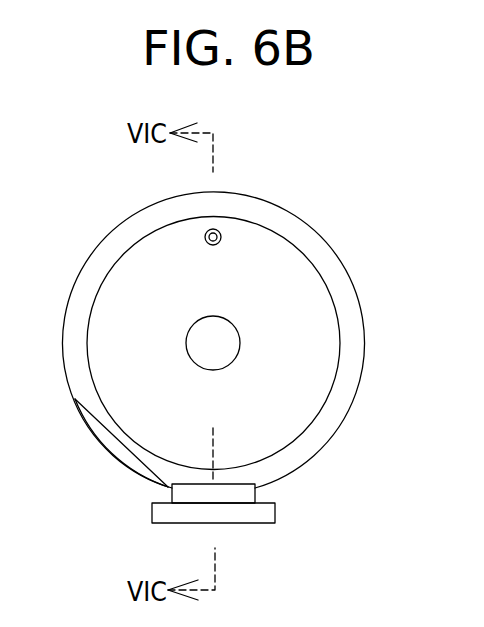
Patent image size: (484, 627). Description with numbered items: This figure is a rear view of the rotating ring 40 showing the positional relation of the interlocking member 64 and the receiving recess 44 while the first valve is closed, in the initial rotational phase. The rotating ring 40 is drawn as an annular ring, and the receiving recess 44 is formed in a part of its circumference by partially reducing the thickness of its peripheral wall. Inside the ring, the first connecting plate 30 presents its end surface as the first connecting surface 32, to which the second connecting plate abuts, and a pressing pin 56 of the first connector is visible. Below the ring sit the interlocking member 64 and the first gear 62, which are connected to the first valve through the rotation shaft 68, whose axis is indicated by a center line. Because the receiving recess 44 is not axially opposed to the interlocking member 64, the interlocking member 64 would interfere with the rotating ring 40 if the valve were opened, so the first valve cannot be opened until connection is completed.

The rotating ring 40 is at (345, 272).
The receiving recess 44 is at (110, 443).
The first connecting surface 32 is at (314, 365).
The first connecting plate 30 is at (267, 343).
The pressing pin 56 is at (219, 232).
The rotation shaft 68 is at (217, 443).
The interlocking member 64 is at (255, 492).
The first gear 62 is at (275, 513).